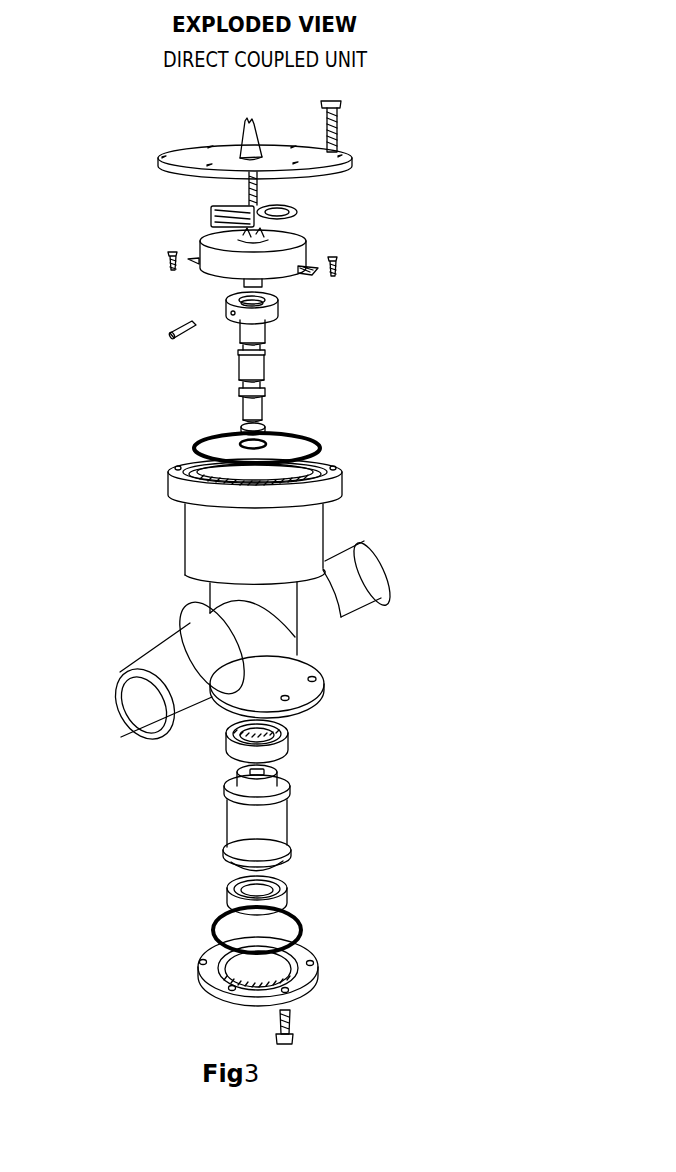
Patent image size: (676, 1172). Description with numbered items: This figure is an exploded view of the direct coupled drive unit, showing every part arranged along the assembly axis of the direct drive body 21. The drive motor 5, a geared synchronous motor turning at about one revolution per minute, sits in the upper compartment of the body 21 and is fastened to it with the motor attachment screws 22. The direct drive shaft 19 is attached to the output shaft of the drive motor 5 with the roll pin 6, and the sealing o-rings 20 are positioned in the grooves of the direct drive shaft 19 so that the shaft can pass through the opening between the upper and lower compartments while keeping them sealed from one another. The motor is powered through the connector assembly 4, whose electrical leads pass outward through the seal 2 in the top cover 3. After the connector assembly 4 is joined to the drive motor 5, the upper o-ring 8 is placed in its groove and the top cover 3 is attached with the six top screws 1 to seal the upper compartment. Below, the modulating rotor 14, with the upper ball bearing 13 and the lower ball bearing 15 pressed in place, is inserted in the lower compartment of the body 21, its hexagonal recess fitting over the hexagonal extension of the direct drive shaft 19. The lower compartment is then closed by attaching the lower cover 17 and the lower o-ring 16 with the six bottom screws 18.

The top screws 1 is at (349, 118).
The seal 2 is at (240, 136).
The top cover 3 is at (350, 163).
The connector assembly 4 is at (205, 215).
The drive motor 5 is at (320, 247).
The roll pin 6 is at (165, 326).
The upper o-ring 8 is at (195, 440).
The upper ball bearing 13 is at (225, 742).
The modulating rotor 14 is at (292, 817).
The lower ball bearing 15 is at (217, 893).
The lower o-ring 16 is at (307, 925).
The lower cover 17 is at (192, 973).
The bottom screws 18 is at (295, 1017).
The direct drive shaft 19 is at (278, 305).
The sealing o-rings 20 is at (270, 445).
The direct drive body 21 is at (330, 525).
The motor attachment screws 22 is at (160, 265).